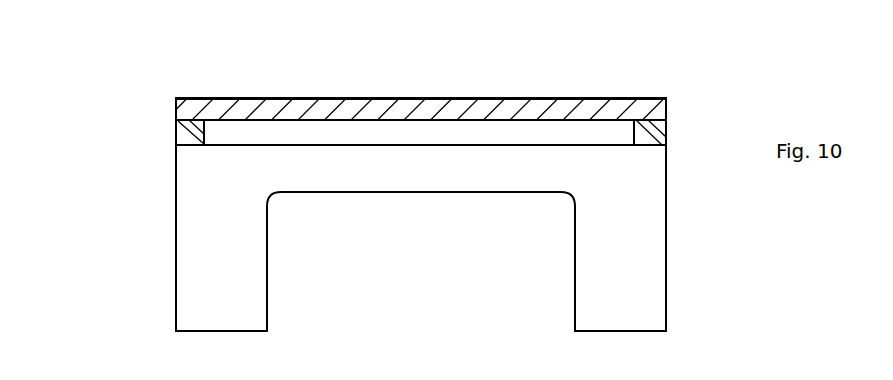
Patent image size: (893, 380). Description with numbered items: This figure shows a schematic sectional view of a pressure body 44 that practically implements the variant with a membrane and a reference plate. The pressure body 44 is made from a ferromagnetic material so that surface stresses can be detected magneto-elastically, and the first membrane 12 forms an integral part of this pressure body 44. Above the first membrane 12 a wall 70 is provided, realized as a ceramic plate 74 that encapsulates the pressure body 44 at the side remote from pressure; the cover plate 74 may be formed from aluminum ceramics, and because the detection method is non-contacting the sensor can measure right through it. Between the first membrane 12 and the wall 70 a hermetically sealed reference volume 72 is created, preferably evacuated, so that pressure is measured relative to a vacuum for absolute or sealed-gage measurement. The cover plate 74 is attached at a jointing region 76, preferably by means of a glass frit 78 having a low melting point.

The first membrane 12 is at (417, 175).
The pressure body 44 is at (190, 251).
The wall 70 is at (447, 99).
The reference volume 72 is at (352, 130).
The ceramic plate 74 is at (265, 108).
The jointing region 76 is at (176, 119).
The glass frit 78 is at (178, 130).